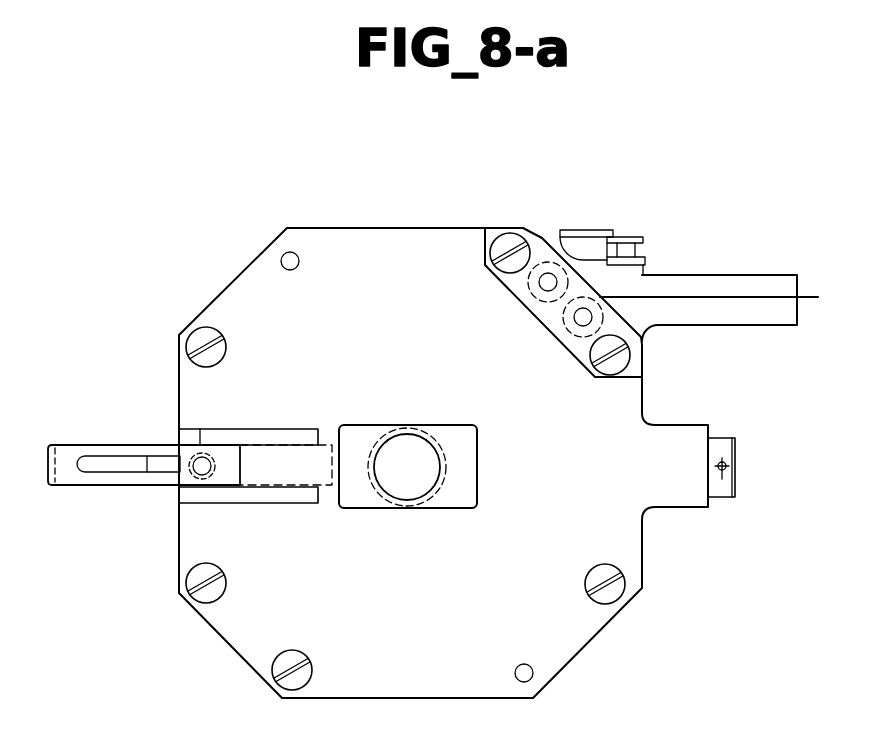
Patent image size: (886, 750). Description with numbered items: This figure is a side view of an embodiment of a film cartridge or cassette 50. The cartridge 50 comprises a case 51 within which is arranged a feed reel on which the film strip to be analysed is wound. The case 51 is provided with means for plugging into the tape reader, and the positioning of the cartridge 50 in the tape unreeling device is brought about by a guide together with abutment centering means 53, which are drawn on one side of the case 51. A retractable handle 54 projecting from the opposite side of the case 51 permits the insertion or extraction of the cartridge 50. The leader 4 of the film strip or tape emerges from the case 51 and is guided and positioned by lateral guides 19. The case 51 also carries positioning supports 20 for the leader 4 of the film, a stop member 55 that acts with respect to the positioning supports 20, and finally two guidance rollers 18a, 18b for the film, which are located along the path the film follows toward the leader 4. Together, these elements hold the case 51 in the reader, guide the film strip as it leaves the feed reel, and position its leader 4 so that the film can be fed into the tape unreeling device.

The film cartridge 50 is at (504, 198).
The case 51 is at (354, 238).
The guidance roller 18a is at (545, 289).
The guidance roller 18b is at (580, 324).
The stop member 55 is at (580, 230).
The positioning supports 20 is at (642, 238).
The leader 4 is at (700, 298).
The lateral guides 19 is at (738, 327).
The abutment centering means 53 is at (684, 424).
The retractable handle 54 is at (158, 447).